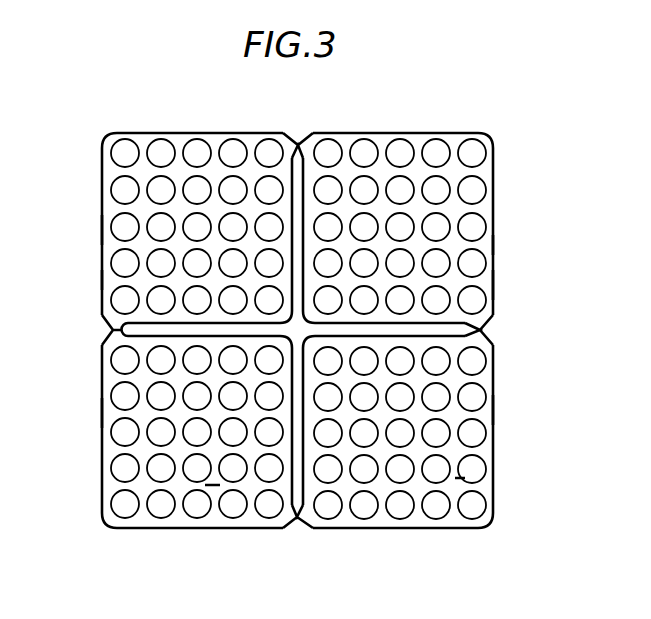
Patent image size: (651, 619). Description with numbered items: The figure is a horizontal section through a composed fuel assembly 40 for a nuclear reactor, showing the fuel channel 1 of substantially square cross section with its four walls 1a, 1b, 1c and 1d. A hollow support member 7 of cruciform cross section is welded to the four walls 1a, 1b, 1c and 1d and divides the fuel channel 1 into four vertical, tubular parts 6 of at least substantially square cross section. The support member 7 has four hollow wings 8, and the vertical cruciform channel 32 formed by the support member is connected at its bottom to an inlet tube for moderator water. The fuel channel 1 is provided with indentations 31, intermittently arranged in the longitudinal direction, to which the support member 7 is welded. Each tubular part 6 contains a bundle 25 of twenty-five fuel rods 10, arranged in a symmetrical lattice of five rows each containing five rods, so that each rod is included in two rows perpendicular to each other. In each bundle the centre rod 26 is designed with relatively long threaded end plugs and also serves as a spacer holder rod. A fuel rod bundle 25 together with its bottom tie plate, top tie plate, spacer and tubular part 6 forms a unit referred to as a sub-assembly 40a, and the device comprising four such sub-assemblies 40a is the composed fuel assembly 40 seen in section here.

The fuel channel 1 is at (493, 388).
The wall of the fuel channel 1a is at (147, 132).
The wall of the fuel channel 1b is at (493, 222).
The wall of the fuel channel 1c is at (390, 532).
The wall of the fuel channel 1d is at (102, 400).
The tubular part 6 is at (102, 231).
The support member 7 is at (370, 326).
The hollow wing 8 is at (299, 143).
The fuel rod 10 is at (474, 264).
The bundle of fuel rods 25 is at (472, 190).
The centre rod 26 is at (193, 220).
The indentation 31 is at (113, 329).
The cruciform channel 32 is at (481, 331).
The composed fuel assembly 40 is at (540, 201).
The sub-assembly 40a is at (108, 277).